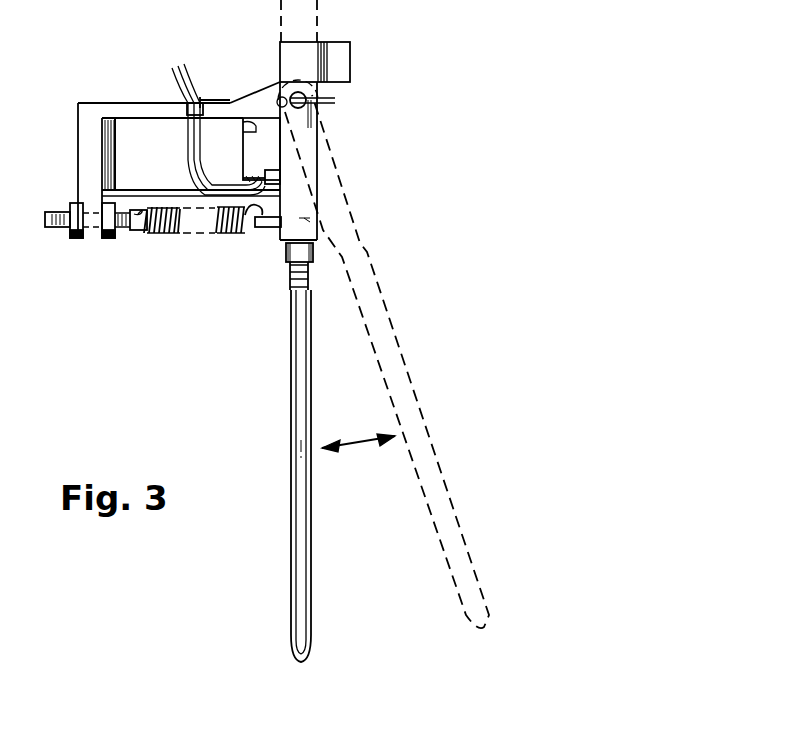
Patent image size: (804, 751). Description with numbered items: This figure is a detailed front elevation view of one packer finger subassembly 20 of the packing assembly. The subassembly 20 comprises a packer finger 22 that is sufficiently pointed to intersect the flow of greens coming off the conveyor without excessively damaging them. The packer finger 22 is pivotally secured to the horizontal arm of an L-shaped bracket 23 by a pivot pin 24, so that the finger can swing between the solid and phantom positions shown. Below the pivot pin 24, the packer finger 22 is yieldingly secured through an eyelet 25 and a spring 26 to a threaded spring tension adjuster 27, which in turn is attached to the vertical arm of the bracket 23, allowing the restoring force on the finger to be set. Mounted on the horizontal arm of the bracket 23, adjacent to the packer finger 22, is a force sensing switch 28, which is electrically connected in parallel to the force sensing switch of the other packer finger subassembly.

The packer finger subassembly 20 is at (383, 354).
The packer finger 22 is at (306, 543).
The L-shaped bracket 23 is at (128, 133).
The pivot pin 24 is at (306, 103).
The eyelet 25 is at (272, 230).
The spring 26 is at (212, 237).
The threaded spring tension adjuster 27 is at (122, 233).
The force sensing switch 28 is at (257, 128).